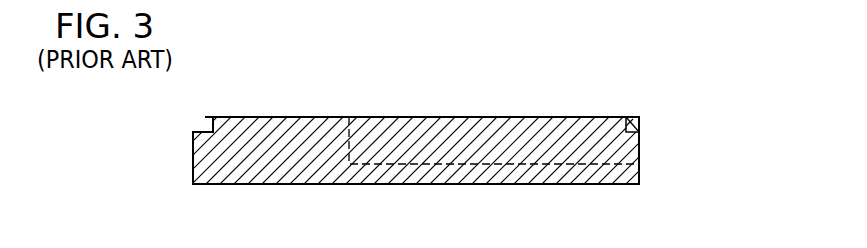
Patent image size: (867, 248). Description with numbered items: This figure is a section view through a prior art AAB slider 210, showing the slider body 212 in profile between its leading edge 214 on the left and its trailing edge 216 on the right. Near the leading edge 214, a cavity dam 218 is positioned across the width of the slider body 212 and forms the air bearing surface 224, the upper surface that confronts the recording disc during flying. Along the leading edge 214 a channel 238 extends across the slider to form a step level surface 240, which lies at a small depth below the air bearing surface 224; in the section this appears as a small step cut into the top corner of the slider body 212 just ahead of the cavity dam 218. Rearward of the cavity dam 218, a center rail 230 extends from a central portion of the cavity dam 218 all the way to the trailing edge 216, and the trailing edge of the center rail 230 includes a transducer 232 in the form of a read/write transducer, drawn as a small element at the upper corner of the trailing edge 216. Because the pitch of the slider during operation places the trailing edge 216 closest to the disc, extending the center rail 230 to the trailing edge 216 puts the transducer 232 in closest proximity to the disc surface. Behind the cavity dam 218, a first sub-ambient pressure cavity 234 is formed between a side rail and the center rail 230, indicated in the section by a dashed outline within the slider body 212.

The AAB slider 210 is at (659, 192).
The slider body 212 is at (262, 185).
The leading edge 214 is at (193, 167).
The trailing edge 216 is at (640, 175).
The cavity dam 218 is at (210, 124).
The air bearing surface 224 is at (293, 115).
The center rail 230 is at (557, 115).
The transducer 232 is at (640, 123).
The first sub-ambient pressure cavity 234 is at (467, 148).
The channel 238 is at (203, 126).
The step level surface 240 is at (195, 132).